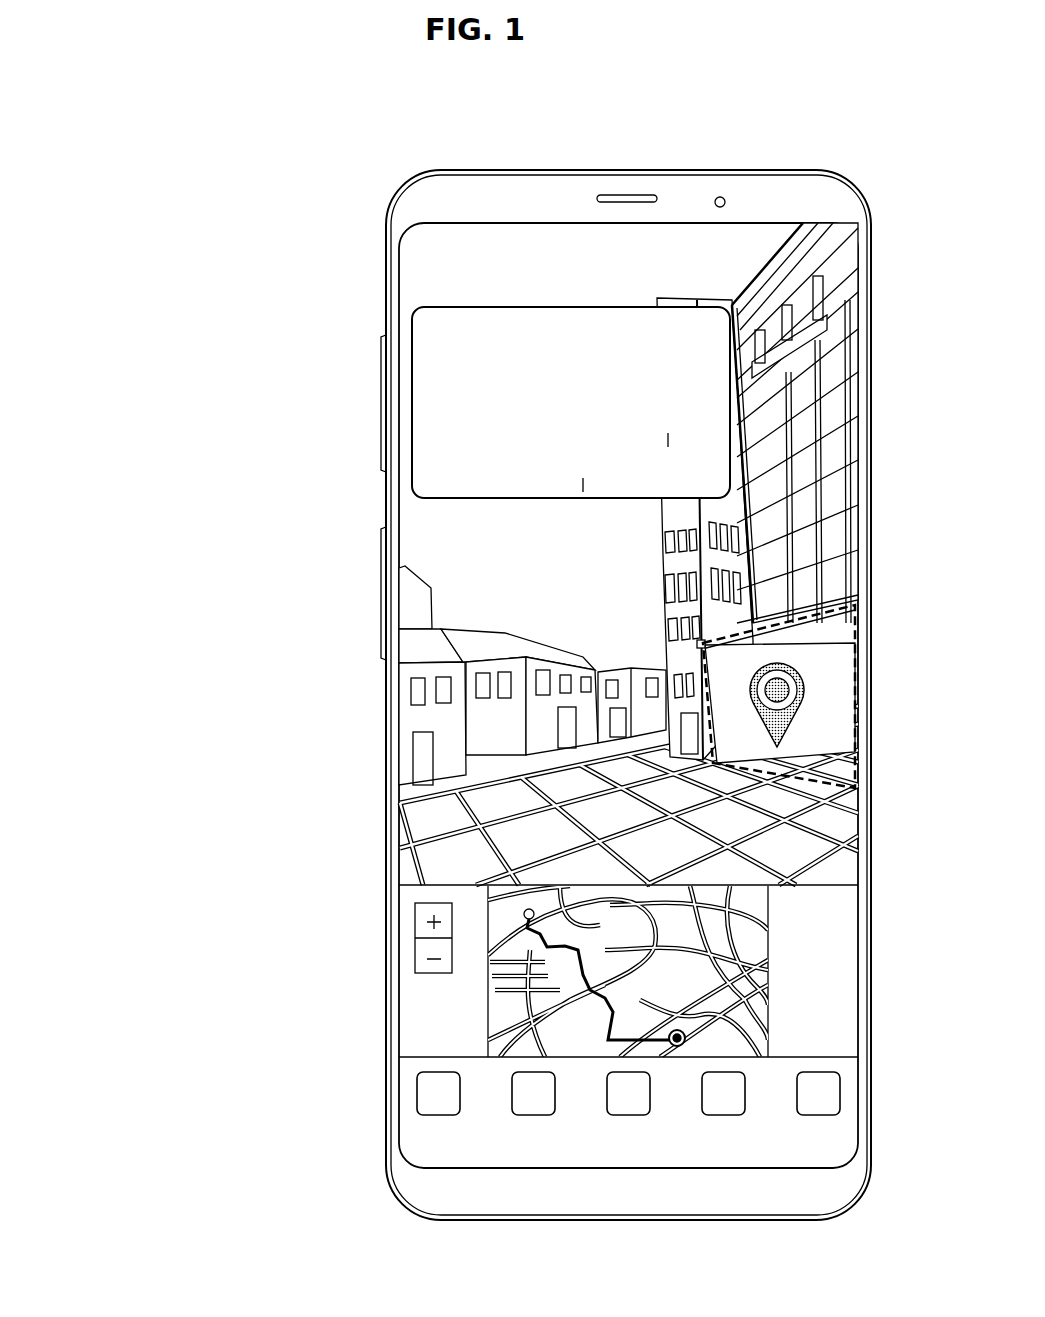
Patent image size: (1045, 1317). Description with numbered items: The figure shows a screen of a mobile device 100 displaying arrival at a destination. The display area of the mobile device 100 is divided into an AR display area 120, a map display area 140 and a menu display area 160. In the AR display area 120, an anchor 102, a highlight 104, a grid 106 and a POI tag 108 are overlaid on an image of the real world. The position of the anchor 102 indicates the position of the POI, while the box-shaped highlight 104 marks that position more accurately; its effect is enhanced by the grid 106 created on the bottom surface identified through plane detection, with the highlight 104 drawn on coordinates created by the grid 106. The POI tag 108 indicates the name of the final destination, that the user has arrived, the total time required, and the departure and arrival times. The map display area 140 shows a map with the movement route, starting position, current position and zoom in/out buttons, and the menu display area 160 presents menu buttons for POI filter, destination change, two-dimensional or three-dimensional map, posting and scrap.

The mobile device 100 is at (782, 147).
The anchor 102 is at (800, 697).
The highlight 104 is at (820, 787).
The grid 106 is at (822, 838).
The POI tag 108 is at (720, 408).
The AR display area 120 is at (348, 880).
The map display area 140 is at (348, 1060).
The menu display area 160 is at (348, 1060).